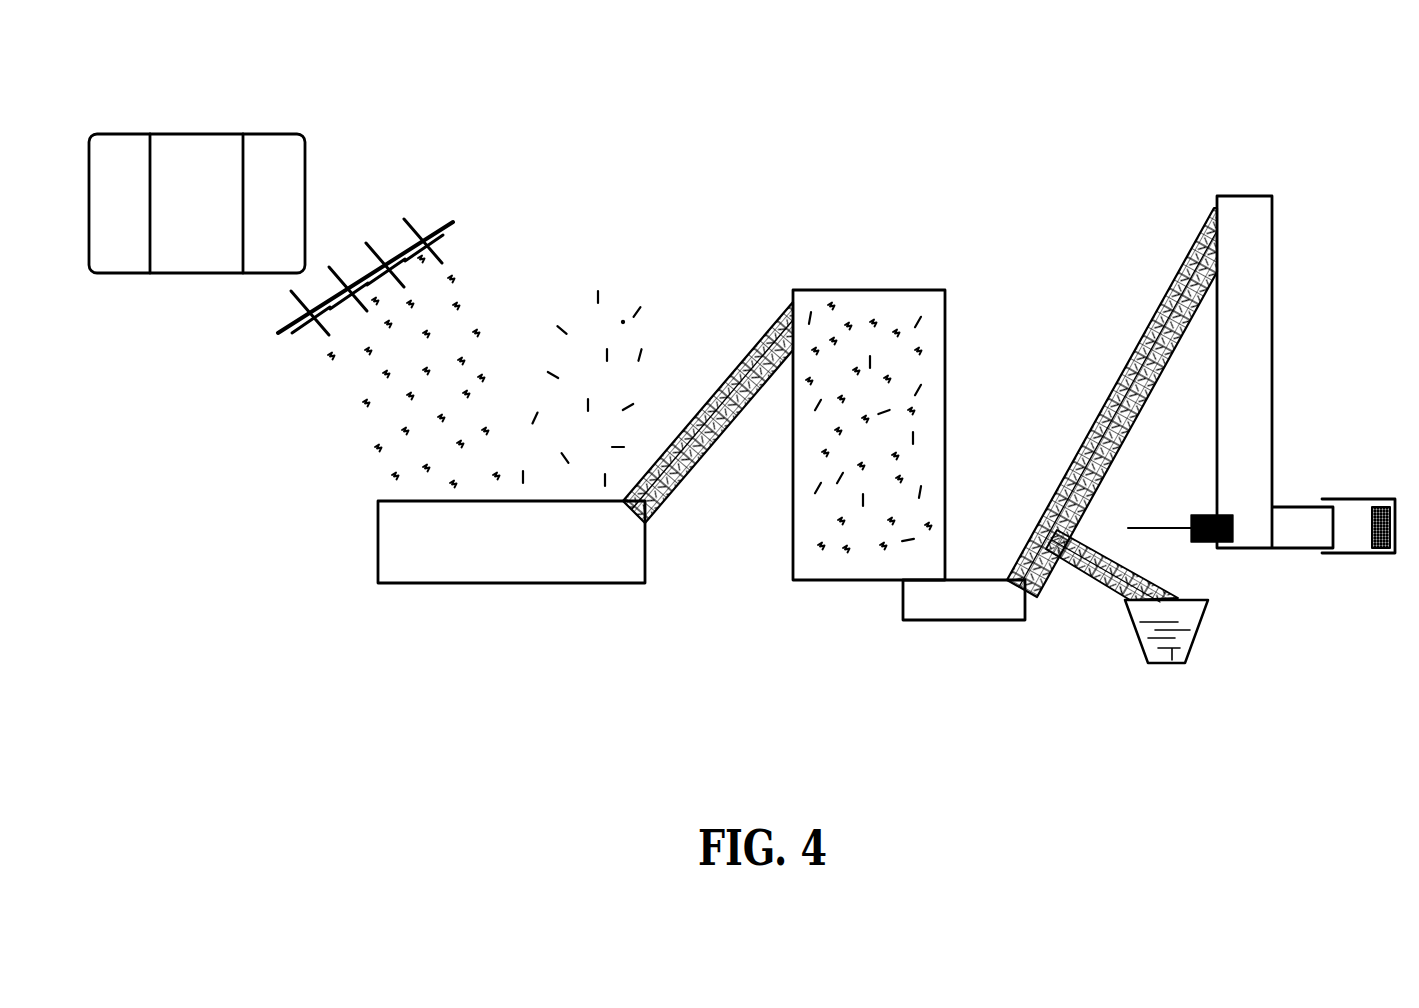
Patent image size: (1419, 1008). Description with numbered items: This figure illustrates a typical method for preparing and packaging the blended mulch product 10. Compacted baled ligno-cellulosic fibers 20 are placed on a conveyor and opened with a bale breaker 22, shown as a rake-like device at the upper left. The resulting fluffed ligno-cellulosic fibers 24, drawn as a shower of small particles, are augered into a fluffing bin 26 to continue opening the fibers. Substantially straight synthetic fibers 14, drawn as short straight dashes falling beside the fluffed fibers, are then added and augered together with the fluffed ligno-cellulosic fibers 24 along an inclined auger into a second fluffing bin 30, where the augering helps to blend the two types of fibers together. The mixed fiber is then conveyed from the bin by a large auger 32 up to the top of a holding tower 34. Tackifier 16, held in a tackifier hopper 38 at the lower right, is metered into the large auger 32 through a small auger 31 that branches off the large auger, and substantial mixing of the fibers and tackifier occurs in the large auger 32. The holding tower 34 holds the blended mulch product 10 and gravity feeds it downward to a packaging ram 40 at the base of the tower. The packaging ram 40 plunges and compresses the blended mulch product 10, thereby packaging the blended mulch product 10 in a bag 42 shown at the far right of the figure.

The blended mulch product 10 is at (1372, 527).
The substantially straight synthetic fibers 14 is at (616, 303).
The tackifier 16 is at (1172, 660).
The compacted baled ligno-cellulosic fibers 20 is at (197, 134).
The bale breaker 22 is at (432, 228).
The fluffed ligno-cellulosic fibers 24 is at (366, 429).
The fluffing bin 26 is at (500, 583).
The fluffing bin 30 is at (863, 290).
The small auger 31 is at (1073, 568).
The large auger 32 is at (1090, 432).
The holding tower 34 is at (1248, 196).
The tackifier hopper 38 is at (1203, 625).
The packaging ram 40 is at (1162, 528).
The bag 42 is at (1362, 499).